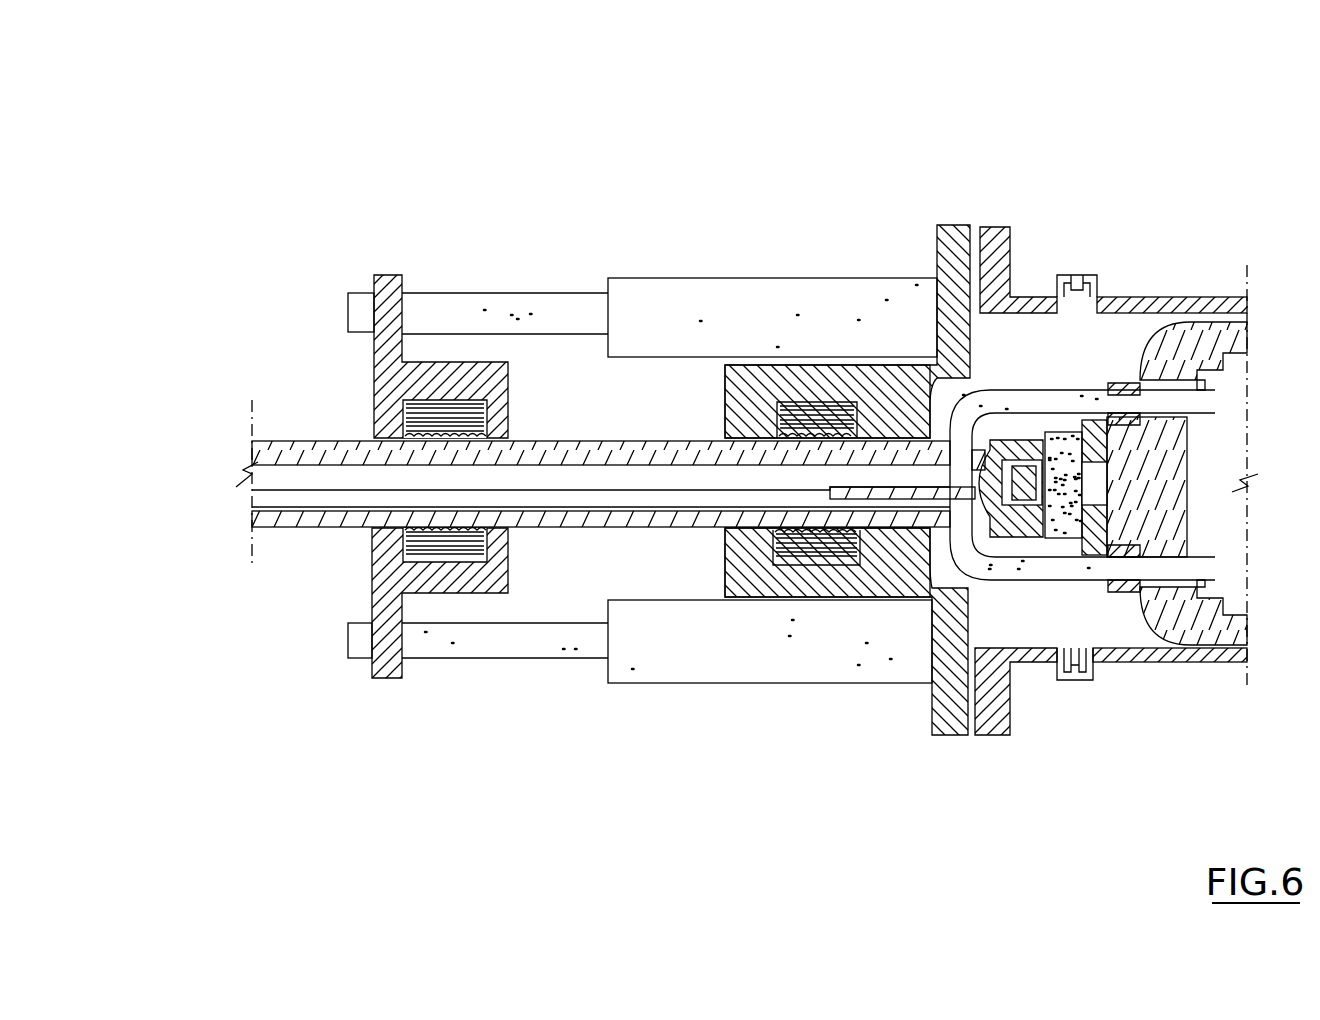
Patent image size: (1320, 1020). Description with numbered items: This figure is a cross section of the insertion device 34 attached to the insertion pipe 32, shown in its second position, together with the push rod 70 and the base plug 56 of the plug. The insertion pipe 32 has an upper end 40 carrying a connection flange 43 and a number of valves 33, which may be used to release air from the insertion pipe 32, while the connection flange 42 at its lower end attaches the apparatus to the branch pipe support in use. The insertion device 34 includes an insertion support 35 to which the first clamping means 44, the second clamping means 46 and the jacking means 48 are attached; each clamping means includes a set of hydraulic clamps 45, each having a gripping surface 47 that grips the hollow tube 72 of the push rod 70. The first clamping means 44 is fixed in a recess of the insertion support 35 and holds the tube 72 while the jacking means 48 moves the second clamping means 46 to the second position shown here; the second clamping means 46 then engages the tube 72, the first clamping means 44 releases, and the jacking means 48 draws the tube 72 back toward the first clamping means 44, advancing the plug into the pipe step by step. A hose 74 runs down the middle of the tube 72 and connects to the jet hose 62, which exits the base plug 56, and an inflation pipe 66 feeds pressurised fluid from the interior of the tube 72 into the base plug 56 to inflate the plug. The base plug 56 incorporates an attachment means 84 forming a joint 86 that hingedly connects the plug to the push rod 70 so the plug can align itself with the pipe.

The insertion pipe 32 is at (1112, 297).
The valves 33 is at (1063, 275).
The insertion device 34 is at (742, 122).
The insertion support 35 is at (950, 225).
The upper end 40 is at (1095, 222).
The connection flange 42 is at (993, 227).
The connection flange 43 is at (1010, 720).
The first clamping means 44 is at (807, 385).
The hydraulic clamps 45 is at (400, 408).
The second clamping means 46 is at (460, 417).
The gripping surface 47 is at (425, 441).
The jacking means 48 is at (663, 278).
The base plug 56 is at (1200, 333).
The jet hose 62 is at (1067, 580).
The inflation pipe 66 is at (1053, 390).
The push rod 70 is at (250, 388).
The tube 72 is at (265, 447).
The hose 74 is at (270, 498).
The attachment means 84 is at (1017, 540).
The joint 86 is at (1060, 505).